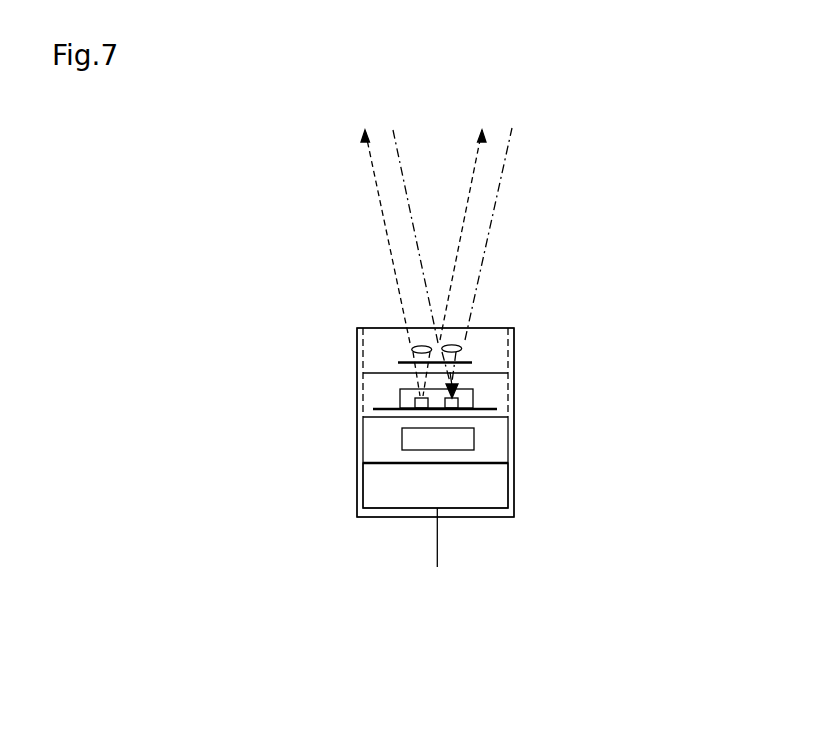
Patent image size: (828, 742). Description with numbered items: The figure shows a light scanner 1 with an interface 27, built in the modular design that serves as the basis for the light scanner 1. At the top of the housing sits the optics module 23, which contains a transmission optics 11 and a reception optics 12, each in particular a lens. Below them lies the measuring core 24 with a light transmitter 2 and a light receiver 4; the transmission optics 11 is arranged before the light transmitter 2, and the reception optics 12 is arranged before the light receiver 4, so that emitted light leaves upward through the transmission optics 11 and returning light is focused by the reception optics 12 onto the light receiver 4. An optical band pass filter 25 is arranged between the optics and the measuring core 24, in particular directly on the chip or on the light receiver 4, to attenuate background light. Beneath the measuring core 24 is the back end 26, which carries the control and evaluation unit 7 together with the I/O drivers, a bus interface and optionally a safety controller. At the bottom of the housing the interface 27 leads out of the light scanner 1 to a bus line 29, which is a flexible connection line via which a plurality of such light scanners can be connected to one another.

The light scanner 1 is at (573, 218).
The light transmitter 2 is at (415, 406).
The light receiver 4 is at (458, 410).
The control and evaluation unit 7 is at (420, 440).
The transmission optics 11 is at (407, 342).
The reception optics 12 is at (462, 343).
The optics module 23 is at (508, 348).
The measuring core 24 is at (508, 400).
The band pass filter 25 is at (403, 360).
The back end 26 is at (500, 450).
The interface 27 is at (495, 495).
The bus line 29 is at (437, 537).